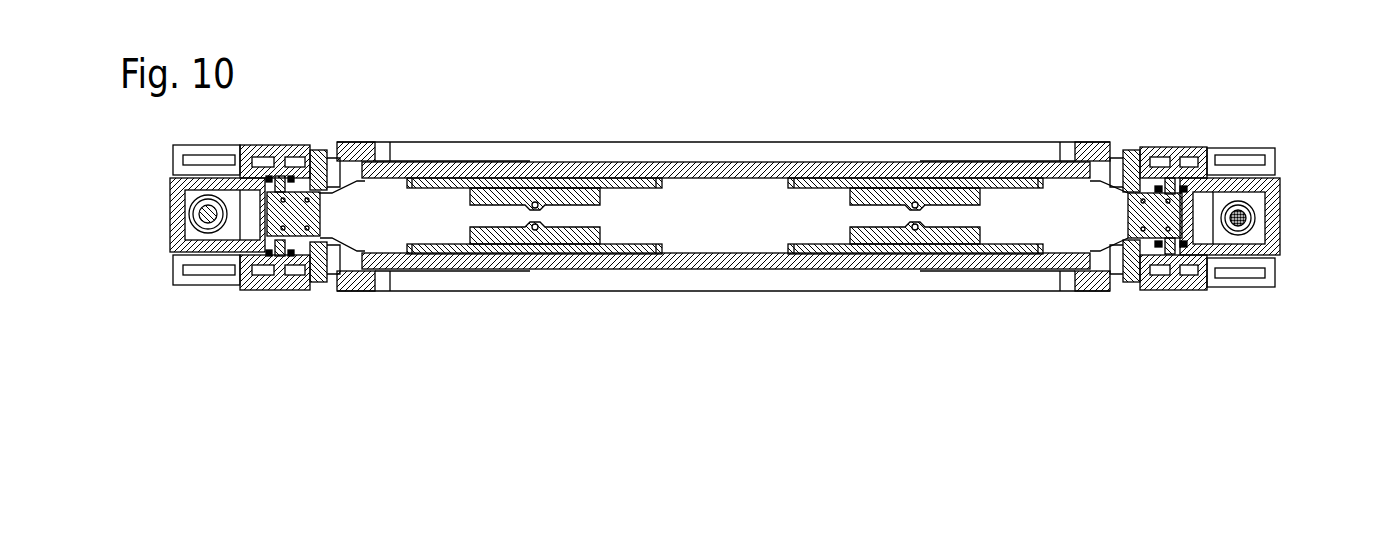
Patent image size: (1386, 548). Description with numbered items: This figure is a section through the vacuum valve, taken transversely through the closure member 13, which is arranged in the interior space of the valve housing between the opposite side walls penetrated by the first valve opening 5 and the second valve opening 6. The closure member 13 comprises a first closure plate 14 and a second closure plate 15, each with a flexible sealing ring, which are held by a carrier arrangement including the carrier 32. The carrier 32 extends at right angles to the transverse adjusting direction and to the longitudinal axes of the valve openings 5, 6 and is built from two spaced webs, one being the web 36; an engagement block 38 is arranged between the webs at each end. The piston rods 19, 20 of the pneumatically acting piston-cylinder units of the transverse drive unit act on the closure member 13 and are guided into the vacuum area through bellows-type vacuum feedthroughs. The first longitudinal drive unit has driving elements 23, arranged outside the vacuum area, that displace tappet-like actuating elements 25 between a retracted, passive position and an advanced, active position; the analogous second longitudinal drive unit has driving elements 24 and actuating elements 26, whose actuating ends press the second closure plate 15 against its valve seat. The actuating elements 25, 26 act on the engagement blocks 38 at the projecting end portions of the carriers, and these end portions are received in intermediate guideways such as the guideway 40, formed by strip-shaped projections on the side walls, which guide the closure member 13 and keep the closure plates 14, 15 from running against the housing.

The first valve opening 5 is at (528, 282).
The second valve opening 6 is at (482, 148).
The closure member 13 is at (900, 158).
The first closure plate 14 is at (488, 268).
The second closure plate 15 is at (535, 165).
The piston rod 19 is at (192, 205).
The piston rod 20 is at (1252, 218).
The driving element 23 is at (260, 282).
The driving element 24 is at (287, 142).
The actuating element 25 is at (1185, 287).
The actuating element 26 is at (1155, 150).
The carrier 32 is at (343, 247).
The web 36 is at (708, 237).
The engagement block 38 is at (1180, 208).
The intermediate guideway 40 is at (1215, 150).